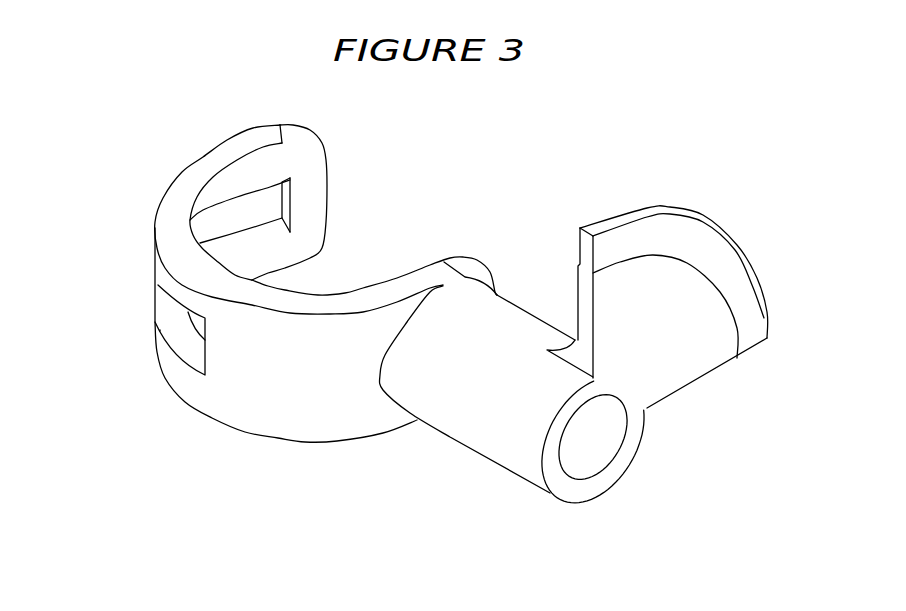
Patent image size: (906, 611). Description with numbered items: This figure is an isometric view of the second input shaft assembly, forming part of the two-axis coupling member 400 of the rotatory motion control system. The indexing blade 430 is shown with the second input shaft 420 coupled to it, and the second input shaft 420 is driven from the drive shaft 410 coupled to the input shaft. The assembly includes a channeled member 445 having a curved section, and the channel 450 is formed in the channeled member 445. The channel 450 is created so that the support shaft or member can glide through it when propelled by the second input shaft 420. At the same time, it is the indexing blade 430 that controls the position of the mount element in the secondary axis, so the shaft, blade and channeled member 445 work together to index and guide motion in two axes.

The two-axis coupling member 400 is at (150, 188).
The channeled member 445 is at (296, 400).
The channel 450 is at (255, 225).
The second input shaft 420 is at (507, 418).
The drive shaft 410 is at (593, 447).
The indexing blade 430 is at (673, 330).